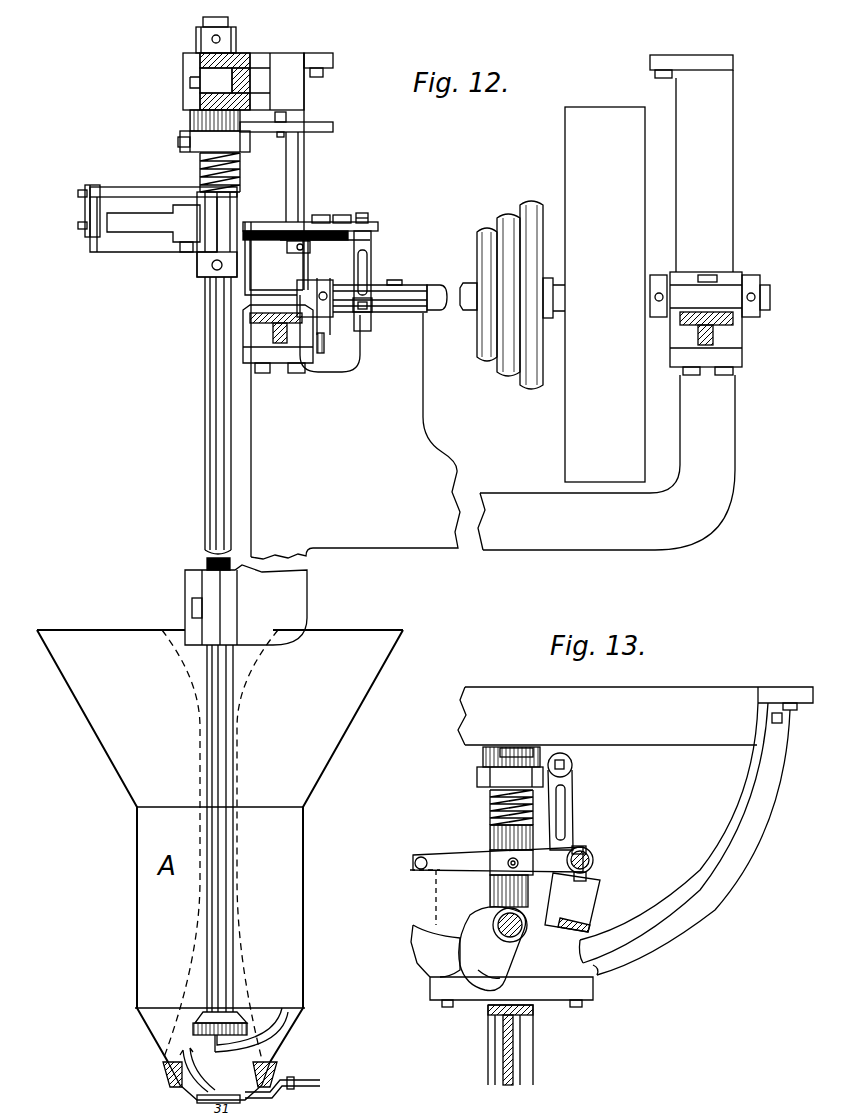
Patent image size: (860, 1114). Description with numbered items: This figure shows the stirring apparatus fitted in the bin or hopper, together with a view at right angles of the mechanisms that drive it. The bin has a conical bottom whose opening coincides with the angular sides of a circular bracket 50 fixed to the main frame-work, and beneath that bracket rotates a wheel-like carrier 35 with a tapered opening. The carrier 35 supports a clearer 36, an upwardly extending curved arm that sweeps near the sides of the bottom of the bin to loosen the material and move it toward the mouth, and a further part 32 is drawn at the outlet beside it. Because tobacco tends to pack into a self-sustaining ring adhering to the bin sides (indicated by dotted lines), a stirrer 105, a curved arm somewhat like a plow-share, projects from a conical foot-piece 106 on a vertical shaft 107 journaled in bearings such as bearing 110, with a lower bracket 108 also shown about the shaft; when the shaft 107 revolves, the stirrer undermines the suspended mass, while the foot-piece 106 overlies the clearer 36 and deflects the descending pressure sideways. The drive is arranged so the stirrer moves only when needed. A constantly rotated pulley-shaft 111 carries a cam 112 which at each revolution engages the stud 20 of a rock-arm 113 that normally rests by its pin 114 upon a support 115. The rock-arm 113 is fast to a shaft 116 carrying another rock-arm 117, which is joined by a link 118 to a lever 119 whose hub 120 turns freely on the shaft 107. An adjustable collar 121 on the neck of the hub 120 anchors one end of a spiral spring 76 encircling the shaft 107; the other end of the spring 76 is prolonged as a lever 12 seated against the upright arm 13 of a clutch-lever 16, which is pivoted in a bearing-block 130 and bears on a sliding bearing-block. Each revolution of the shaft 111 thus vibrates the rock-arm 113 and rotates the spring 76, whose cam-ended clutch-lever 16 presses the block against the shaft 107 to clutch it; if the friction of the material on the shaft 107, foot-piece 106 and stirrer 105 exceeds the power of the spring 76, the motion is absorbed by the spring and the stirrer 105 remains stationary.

In FIG. 12, the bearing 110 is at (188, 78).
In FIG. 12, the hub 120 is at (215, 120).
In FIG. 12, the adjustable collar 121 is at (183, 136).
In FIG. 13, the adjustable collar 121 is at (476, 778).
In FIG. 12, the lever 119 is at (290, 120).
In FIG. 13, the lever 119 is at (482, 761).
In FIG. 12, the link 118 is at (280, 118).
In FIG. 13, the link 118 is at (525, 748).
In FIG. 12, the spiral spring 76 is at (202, 170).
In FIG. 13, the spiral spring 76 is at (490, 808).
In FIG. 12, the rock-arm 117 is at (286, 182).
In FIG. 13, the rock-arm 117 is at (567, 779).
In FIG. 12, the lever 12 is at (140, 190).
In FIG. 12, the upright arm 13 is at (87, 208).
In FIG. 12, the clutch-lever 16 is at (153, 224).
In FIG. 12, the bearing-block 130 is at (217, 234).
In FIG. 13, the bearing-block 130 is at (490, 841).
In FIG. 12, the shaft 107 is at (205, 327).
In FIG. 13, the shaft 107 is at (488, 910).
In FIG. 12, the shaft 116 is at (268, 226).
In FIG. 13, the shaft 116 is at (578, 852).
In FIG. 12, the stud 20 is at (317, 221).
In FIG. 13, the stud 20 is at (520, 863).
In FIG. 12, the pin 114 is at (375, 227).
In FIG. 13, the pin 114 is at (413, 862).
In FIG. 12, the rock-arm 113 is at (320, 246).
In FIG. 13, the rock-arm 113 is at (498, 859).
In FIG. 12, the support 115 is at (366, 258).
In FIG. 13, the support 115 is at (438, 890).
In FIG. 12, the pulley-shaft 111 is at (436, 282).
In FIG. 13, the pulley-shaft 111 is at (526, 925).
In FIG. 12, the cam 112 is at (323, 340).
In FIG. 13, the cam 112 is at (492, 949).
In FIG. 12, the bracket 108 is at (186, 594).
In FIG. 12, the conical foot-piece 106 is at (229, 1022).
In FIG. 12, the stirrer 105 is at (284, 1007).
In FIG. 12, the clearer 36 is at (187, 1055).
In FIG. 12, the carrier 35 is at (168, 1079).
In FIG. 12, the circular bracket 50 is at (277, 1067).
In FIG. 12, the pipe 32 is at (280, 1094).